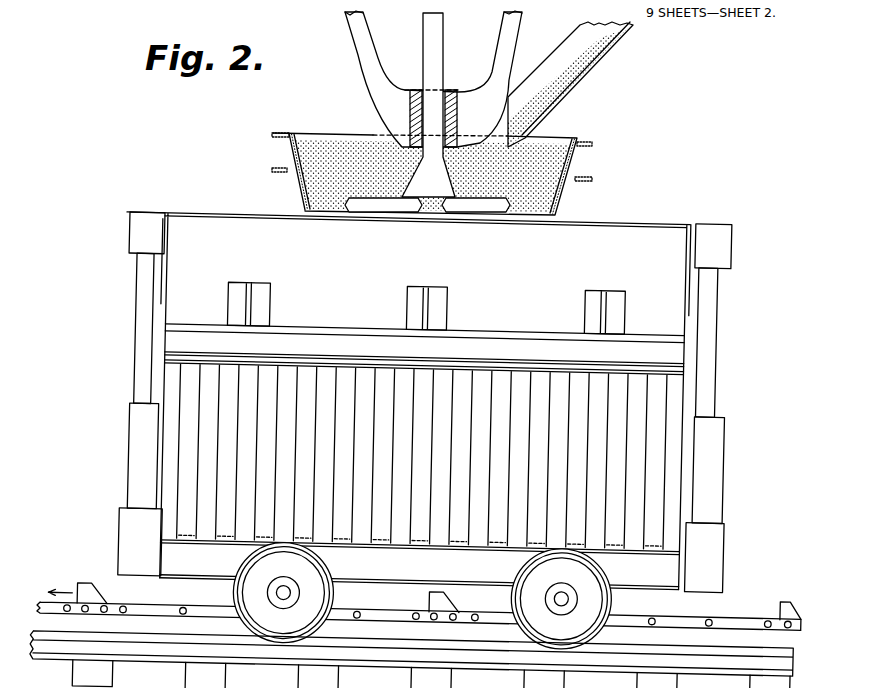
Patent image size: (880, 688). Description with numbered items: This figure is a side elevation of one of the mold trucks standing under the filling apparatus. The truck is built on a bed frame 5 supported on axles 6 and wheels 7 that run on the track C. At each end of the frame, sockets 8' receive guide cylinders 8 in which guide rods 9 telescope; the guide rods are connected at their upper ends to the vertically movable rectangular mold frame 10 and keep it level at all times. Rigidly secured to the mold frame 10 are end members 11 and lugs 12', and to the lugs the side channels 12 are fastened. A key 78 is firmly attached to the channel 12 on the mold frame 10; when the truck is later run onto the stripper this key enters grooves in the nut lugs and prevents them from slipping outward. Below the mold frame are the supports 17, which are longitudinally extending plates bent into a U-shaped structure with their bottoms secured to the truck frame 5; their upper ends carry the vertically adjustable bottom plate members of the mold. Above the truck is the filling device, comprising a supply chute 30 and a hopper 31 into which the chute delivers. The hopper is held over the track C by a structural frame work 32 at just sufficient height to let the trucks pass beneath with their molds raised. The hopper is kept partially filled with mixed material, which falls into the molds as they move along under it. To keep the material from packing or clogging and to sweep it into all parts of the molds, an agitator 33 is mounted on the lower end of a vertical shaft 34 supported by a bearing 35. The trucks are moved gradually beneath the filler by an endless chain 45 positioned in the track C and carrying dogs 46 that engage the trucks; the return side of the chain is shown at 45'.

The bed frame 5 is at (420, 565).
The axles 6 is at (285, 599).
The wheels 7 is at (291, 583).
The guide cylinders 8 is at (417, 463).
The sockets 8' is at (413, 550).
The guide rods 9 is at (140, 297).
The mold frame 10 is at (405, 401).
The end members 11 is at (147, 211).
The side channels 12 is at (424, 319).
The lugs 12' is at (426, 297).
The supports 17 is at (225, 408).
The supply chute 30 is at (603, 55).
The hopper 31 is at (298, 140).
The structural frame work 32 is at (285, 162).
The agitator 33 is at (398, 212).
The vertical shaft 34 is at (434, 47).
The bearing 35 is at (411, 113).
The endless chain 45 is at (419, 610).
The return side of the chain 45' is at (431, 674).
The dogs 46 is at (433, 594).
The key 78 is at (379, 356).
The track C is at (365, 643).